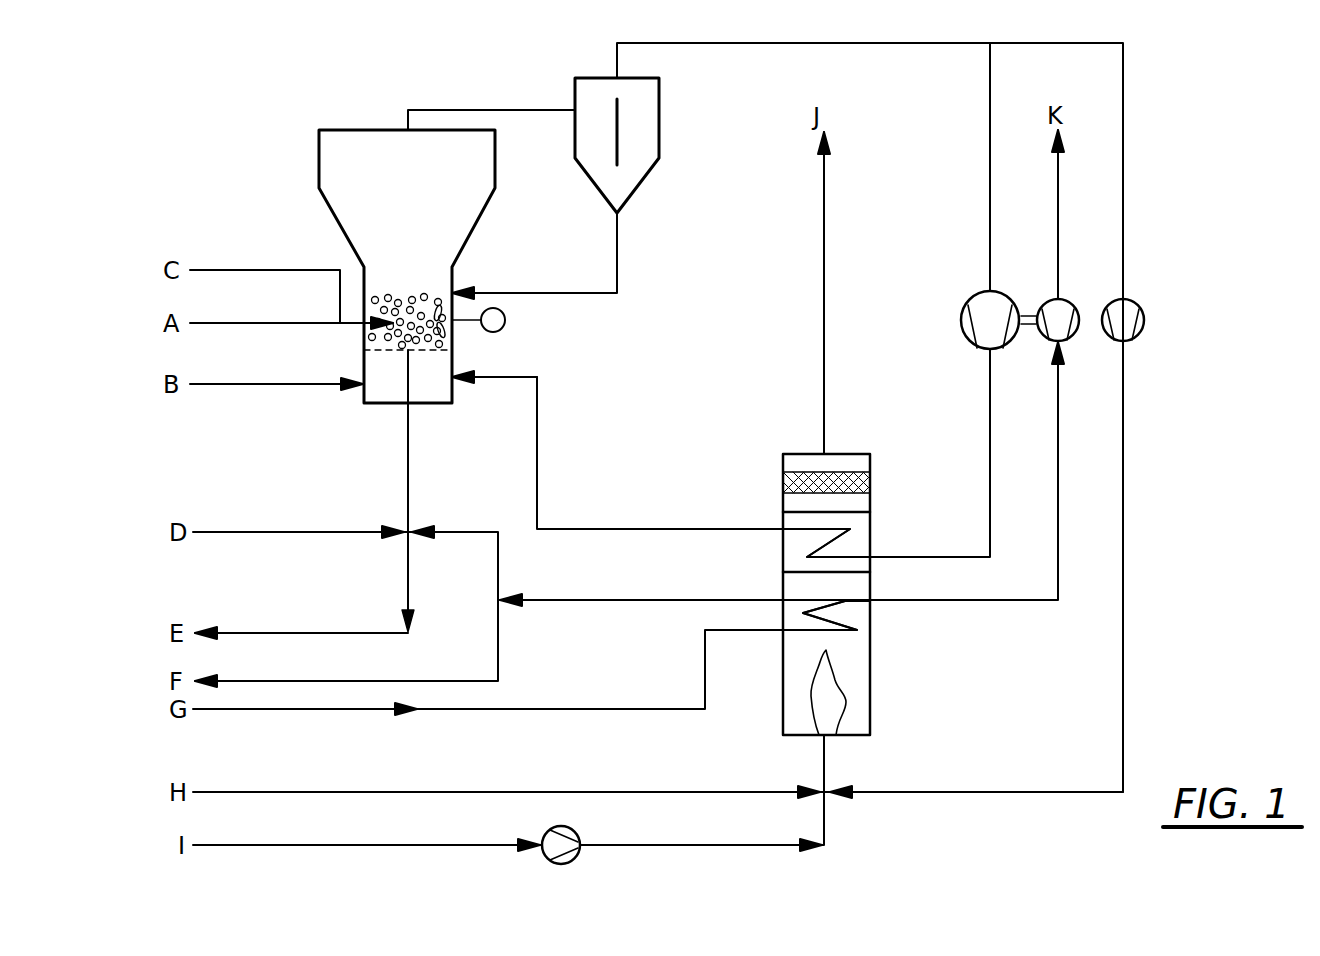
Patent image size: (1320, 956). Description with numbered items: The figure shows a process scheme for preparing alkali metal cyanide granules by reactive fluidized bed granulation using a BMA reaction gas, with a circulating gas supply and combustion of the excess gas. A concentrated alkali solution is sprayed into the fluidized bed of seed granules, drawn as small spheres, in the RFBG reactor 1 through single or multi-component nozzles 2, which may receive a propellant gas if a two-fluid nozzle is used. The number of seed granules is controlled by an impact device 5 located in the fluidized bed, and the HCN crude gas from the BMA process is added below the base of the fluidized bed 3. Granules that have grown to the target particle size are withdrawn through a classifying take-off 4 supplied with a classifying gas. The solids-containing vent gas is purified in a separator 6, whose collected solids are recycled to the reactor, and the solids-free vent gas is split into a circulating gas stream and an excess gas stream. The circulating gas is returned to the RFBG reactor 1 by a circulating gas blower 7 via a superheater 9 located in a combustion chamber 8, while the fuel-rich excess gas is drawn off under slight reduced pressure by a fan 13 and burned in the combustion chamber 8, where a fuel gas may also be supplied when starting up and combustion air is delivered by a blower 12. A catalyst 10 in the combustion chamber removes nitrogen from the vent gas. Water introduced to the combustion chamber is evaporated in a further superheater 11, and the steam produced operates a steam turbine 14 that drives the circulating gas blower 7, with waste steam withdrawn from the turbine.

The RFBG reactor 1 is at (330, 153).
The nozzles 2 is at (370, 330).
The base of the fluidized bed 3 is at (400, 358).
The classifying take-off 4 is at (407, 452).
The impact device 5 is at (510, 320).
The separator 6 is at (659, 118).
The circulating gas blower 7 is at (962, 312).
The combustion chamber 8 is at (870, 690).
The superheater 9 is at (835, 546).
The catalyst 10 is at (870, 490).
The superheater 11 is at (838, 620).
The blower 12 is at (576, 858).
The fan 13 is at (1140, 296).
The steam turbine 14 is at (1046, 302).